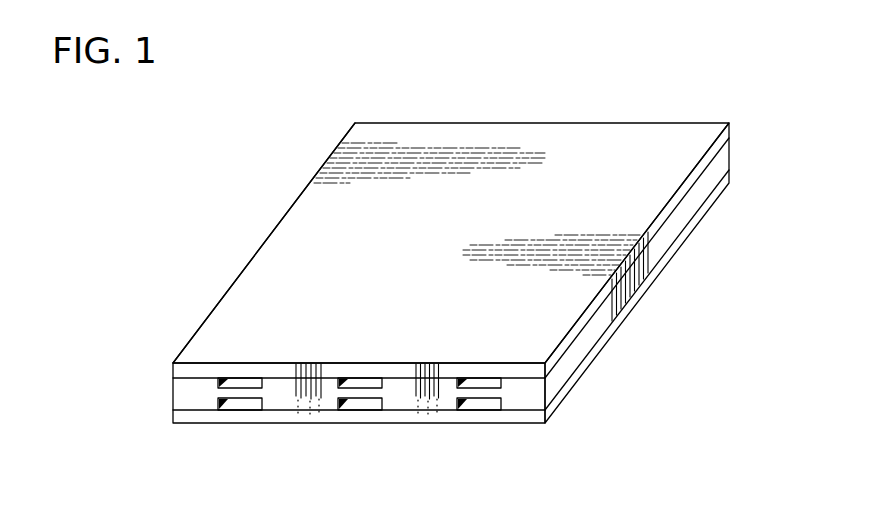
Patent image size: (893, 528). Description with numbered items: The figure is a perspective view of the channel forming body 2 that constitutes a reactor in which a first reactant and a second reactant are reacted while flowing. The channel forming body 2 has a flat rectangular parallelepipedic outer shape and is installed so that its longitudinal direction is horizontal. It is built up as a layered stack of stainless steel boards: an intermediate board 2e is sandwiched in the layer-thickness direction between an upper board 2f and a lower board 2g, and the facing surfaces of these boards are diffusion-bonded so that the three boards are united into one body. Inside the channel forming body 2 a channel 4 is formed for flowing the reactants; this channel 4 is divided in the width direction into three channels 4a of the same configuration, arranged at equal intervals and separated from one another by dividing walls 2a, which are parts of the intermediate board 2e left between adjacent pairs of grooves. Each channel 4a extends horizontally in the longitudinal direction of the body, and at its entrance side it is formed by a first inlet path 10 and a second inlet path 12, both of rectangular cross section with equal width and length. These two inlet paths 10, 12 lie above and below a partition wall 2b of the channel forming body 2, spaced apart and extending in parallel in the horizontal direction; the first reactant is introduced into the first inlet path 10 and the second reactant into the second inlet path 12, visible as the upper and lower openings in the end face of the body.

The channel forming body 2 is at (486, 114).
The dividing wall 2a is at (293, 398).
The partition wall 2b is at (249, 393).
The intermediate board 2e is at (673, 230).
The upper board 2f is at (295, 224).
The lower board 2g is at (593, 352).
The channel 4 is at (541, 305).
The channel 4a is at (252, 380).
The first inlet path 10 is at (224, 386).
The second inlet path 12 is at (224, 402).